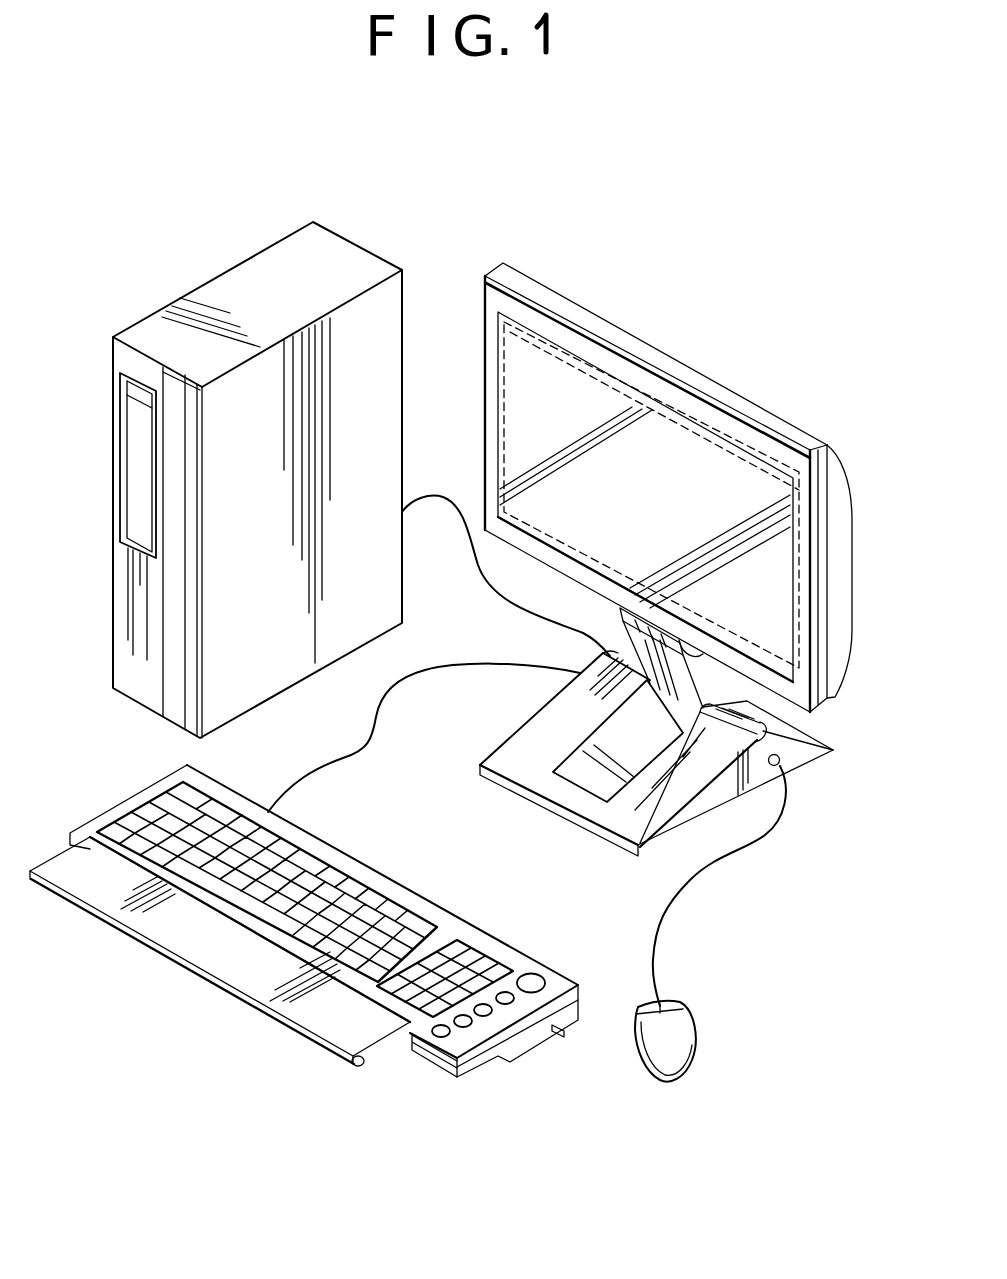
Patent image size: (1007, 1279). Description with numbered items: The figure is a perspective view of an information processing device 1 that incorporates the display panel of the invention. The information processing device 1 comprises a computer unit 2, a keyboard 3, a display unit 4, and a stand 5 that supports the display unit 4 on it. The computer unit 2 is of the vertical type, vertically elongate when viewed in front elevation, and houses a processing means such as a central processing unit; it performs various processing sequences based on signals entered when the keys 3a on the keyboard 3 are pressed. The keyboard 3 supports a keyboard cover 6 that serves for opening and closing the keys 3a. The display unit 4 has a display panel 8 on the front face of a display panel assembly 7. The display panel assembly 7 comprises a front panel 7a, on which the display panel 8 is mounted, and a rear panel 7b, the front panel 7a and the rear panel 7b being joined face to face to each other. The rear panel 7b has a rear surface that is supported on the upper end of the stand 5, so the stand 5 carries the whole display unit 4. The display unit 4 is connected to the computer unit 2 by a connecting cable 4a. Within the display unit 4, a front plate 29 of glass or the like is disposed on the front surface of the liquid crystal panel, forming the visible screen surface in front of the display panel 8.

The information processing device 1 is at (636, 249).
The computer unit 2 is at (222, 285).
The keyboard 3 is at (425, 1060).
The keys 3a is at (355, 890).
The display unit 4 is at (662, 352).
The connecting cable 4a is at (455, 492).
The stand 5 is at (813, 752).
The keyboard cover 6 is at (225, 968).
The display panel assembly 7 is at (832, 608).
The front panel 7a is at (770, 440).
The rear panel 7b is at (835, 558).
The display panel 8 is at (710, 418).
The front plate 29 is at (522, 370).